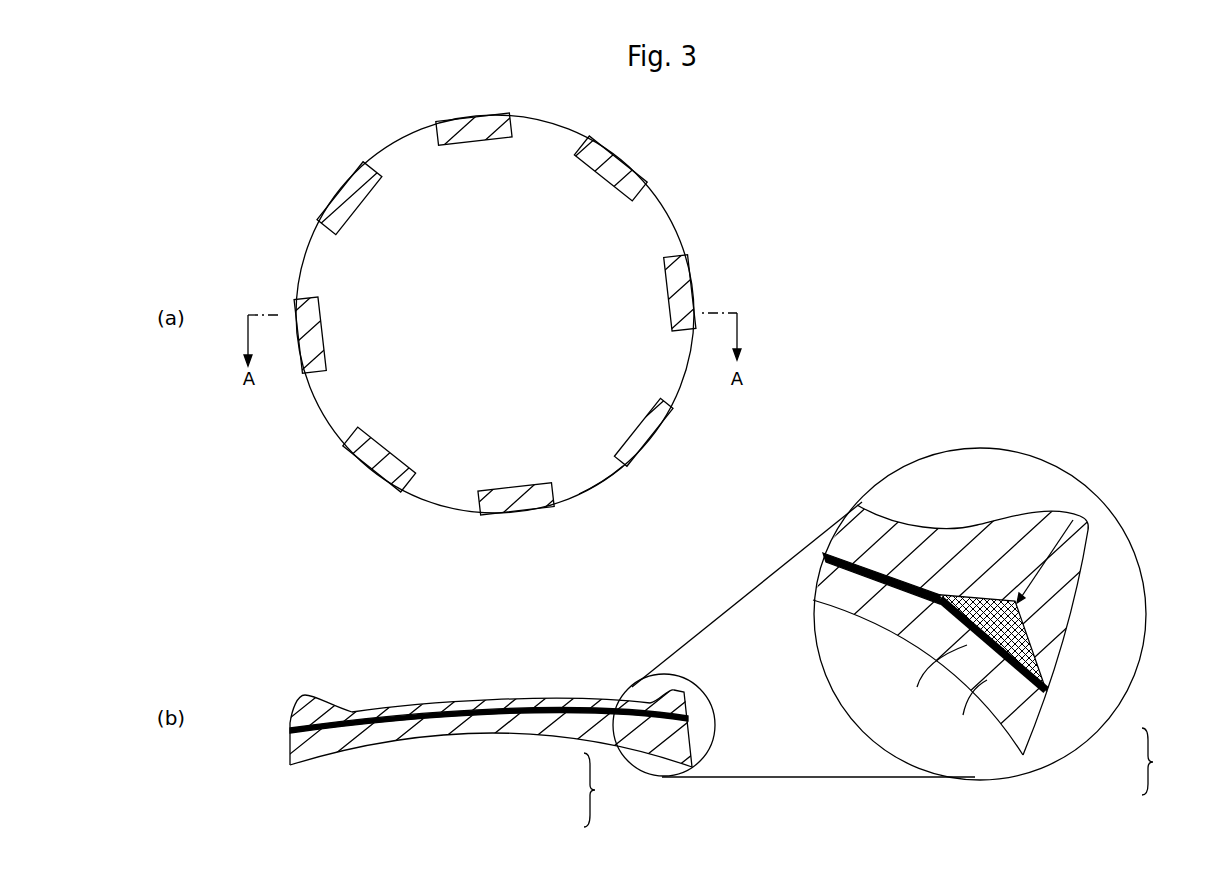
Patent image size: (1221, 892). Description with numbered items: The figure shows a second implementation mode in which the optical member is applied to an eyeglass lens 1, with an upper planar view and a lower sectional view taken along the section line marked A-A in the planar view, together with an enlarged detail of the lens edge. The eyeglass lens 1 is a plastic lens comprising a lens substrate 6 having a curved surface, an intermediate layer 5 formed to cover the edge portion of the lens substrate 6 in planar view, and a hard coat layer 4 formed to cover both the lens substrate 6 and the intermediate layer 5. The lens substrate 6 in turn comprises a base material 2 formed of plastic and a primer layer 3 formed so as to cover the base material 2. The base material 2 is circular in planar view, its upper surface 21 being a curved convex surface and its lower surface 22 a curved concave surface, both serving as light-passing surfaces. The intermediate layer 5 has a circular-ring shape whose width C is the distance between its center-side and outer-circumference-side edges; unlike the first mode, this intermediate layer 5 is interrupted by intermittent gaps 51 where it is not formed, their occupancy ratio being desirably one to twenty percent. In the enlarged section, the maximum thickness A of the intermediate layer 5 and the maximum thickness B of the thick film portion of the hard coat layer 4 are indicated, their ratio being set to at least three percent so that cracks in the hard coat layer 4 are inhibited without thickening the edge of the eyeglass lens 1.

The eyeglass lens 1 is at (689, 209).
The base material 2 is at (630, 303).
The upper surface 21 is at (425, 707).
The lower surface 22 is at (440, 740).
The primer layer 3 is at (540, 720).
The hard coat layer 4 is at (465, 703).
The intermediate layer 5 is at (652, 420).
The intermittent gaps 51 is at (577, 468).
The lens substrate 6 is at (876, 777).
The maximum value of thickness of intermediate layer A is at (970, 713).
The maximum value of thickness of thick film portion of hard coat layer B is at (1083, 586).
The width of intermediate layer C is at (935, 680).